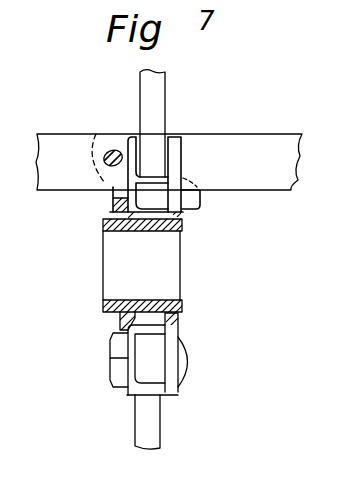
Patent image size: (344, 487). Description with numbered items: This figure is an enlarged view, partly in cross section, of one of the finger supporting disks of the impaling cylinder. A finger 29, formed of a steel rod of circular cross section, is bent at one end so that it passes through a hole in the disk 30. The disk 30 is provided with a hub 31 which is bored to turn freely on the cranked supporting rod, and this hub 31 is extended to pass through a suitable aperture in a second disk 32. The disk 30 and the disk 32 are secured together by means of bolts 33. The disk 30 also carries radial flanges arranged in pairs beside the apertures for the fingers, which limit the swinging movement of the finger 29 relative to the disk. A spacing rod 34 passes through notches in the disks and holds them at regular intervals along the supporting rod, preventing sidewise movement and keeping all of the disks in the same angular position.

The finger 29 is at (163, 110).
The disk 30 is at (132, 387).
The hub 31 is at (180, 308).
The disk 32 is at (172, 388).
The bolt 33 is at (112, 348).
The spacing rod 34 is at (293, 120).